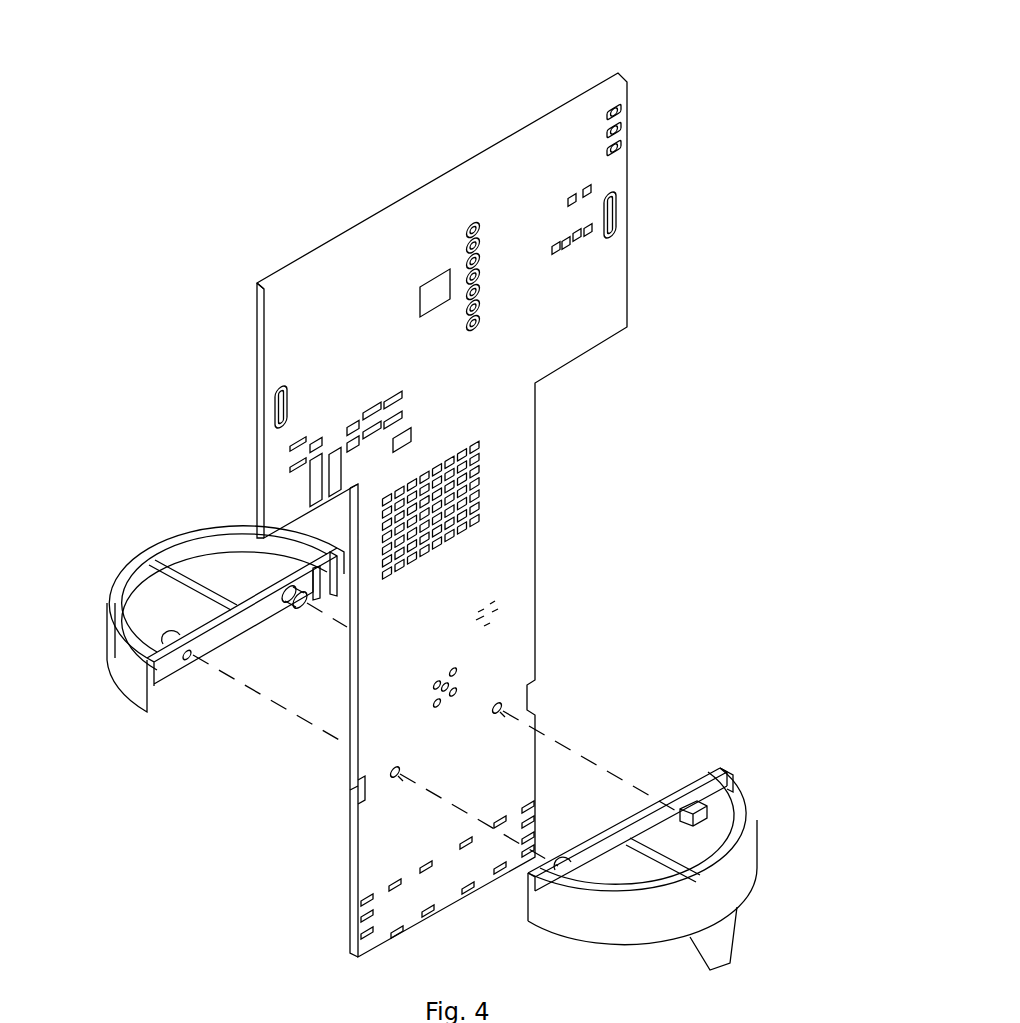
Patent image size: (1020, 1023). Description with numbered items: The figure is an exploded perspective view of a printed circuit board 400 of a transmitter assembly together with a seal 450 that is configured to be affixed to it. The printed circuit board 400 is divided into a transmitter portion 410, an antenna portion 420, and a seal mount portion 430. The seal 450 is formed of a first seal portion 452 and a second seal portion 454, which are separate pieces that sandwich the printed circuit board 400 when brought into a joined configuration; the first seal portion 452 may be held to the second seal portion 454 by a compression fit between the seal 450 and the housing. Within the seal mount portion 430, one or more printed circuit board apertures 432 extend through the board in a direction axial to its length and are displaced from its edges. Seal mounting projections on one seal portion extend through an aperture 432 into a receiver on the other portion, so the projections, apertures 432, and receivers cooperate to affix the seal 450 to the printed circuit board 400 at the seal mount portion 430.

The printed circuit board 400 is at (655, 66).
The transmitter portion 410 is at (536, 510).
The antenna portion 420 is at (348, 878).
The seal mount portion 430 is at (536, 662).
The printed circuit board aperture 432 is at (497, 714).
The seal 450 is at (218, 526).
The first seal portion 452 is at (772, 848).
The second seal portion 454 is at (100, 590).